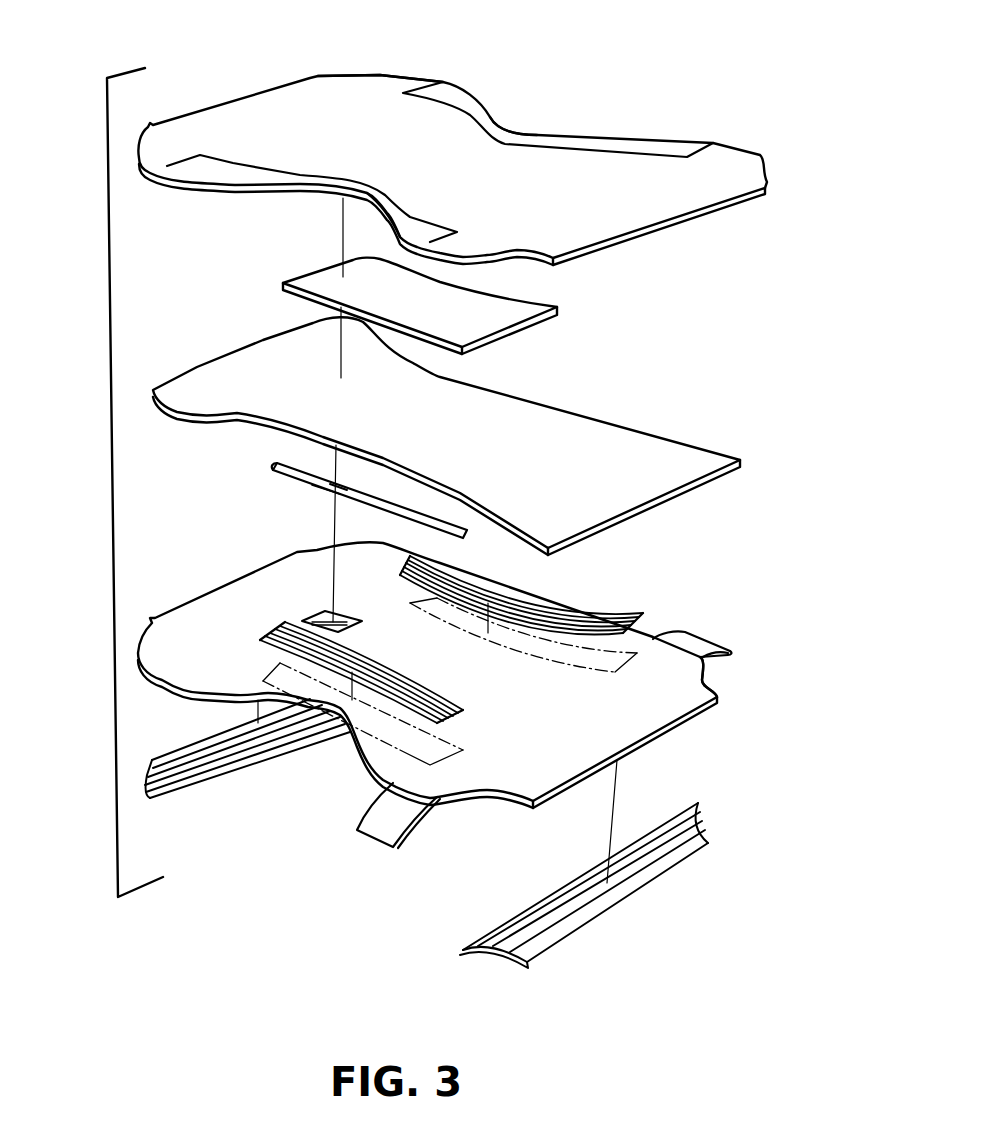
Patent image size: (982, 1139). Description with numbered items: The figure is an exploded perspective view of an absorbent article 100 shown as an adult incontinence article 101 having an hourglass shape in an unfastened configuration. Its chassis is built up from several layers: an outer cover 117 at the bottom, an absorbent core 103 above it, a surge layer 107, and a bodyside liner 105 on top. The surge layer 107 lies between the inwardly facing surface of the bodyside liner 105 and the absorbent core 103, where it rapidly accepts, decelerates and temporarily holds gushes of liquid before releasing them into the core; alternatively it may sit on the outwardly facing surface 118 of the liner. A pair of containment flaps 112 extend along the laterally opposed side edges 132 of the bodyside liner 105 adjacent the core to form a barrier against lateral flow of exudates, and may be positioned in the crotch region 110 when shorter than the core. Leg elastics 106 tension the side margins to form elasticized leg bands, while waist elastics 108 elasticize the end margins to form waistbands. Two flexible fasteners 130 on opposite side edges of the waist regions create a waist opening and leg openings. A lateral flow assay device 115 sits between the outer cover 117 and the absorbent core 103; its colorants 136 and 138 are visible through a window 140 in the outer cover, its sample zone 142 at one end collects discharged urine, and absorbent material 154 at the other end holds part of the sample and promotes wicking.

The keyboard assembly 100 is at (108, 483).
The adult incontinence article 101 is at (578, 45).
The absorbent core 103 is at (253, 350).
The bodyside liner 105 is at (730, 148).
The leg elastics 106 is at (552, 606).
The surge layer 107 is at (540, 324).
The waist elastics 108 is at (193, 784).
The crotch region 110 is at (297, 95).
The containment flaps 112 is at (540, 136).
The base plate 115 is at (660, 738).
The outer cover 117 is at (710, 683).
The outwardly facing surface 118 is at (377, 82).
The fasteners 130 is at (684, 636).
The side edges 132 is at (487, 112).
The colorant 136 is at (363, 490).
The colorant 138 is at (313, 486).
The window 140 is at (323, 617).
The sample zone 142 is at (454, 534).
The absorbent material 154 is at (280, 472).